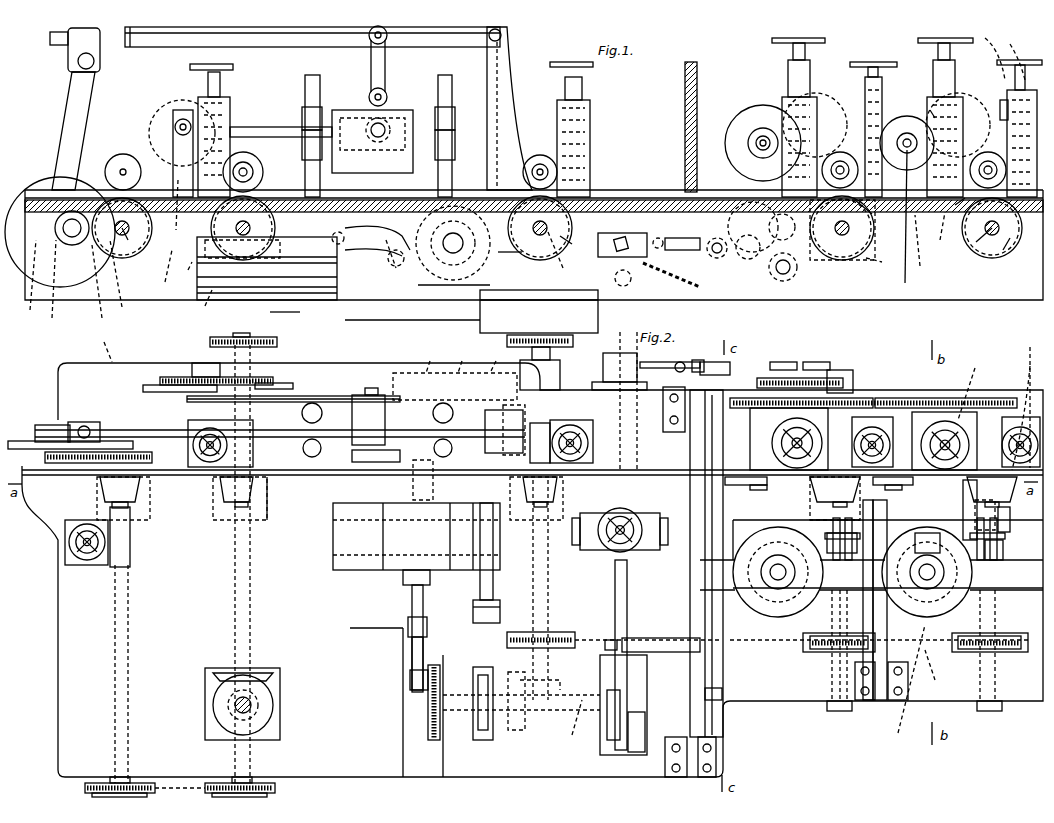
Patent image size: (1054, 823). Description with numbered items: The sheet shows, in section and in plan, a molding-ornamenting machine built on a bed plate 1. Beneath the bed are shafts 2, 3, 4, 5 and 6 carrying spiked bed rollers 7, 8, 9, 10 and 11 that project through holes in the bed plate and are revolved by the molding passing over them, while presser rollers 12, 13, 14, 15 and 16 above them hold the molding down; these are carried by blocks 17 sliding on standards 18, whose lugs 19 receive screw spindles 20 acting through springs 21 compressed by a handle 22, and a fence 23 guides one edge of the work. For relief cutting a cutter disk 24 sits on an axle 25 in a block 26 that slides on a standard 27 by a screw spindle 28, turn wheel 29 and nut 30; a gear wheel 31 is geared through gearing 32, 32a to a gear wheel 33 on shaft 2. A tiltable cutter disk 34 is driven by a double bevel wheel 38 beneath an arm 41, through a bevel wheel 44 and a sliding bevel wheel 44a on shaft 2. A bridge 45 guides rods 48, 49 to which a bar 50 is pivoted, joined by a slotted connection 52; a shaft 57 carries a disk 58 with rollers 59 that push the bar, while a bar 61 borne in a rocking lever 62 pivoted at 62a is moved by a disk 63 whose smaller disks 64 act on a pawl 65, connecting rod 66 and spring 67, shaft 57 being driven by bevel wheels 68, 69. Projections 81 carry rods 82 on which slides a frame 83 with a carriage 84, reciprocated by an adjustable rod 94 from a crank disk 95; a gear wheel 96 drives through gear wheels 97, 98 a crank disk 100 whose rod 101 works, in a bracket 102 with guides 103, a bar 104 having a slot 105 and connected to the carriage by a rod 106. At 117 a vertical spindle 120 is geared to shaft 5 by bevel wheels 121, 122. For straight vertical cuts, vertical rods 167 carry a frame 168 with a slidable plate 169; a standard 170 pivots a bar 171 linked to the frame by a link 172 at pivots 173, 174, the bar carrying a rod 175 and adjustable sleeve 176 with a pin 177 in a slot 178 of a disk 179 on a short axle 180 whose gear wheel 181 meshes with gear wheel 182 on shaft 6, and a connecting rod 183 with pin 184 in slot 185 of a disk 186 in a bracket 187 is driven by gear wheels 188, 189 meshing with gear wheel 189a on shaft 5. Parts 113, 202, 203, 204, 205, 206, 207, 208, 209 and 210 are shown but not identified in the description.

In FIG. 1, the bed plate 1 is at (160, 200).
In FIG. 1, the shaft 2 is at (990, 245).
In FIG. 2, the shaft 2 is at (1000, 590).
In FIG. 1, the shaft 3 is at (848, 238).
In FIG. 2, the shaft 3 is at (836, 651).
In FIG. 1, the shaft 4 is at (558, 256).
In FIG. 2, the shaft 4 is at (548, 600).
In FIG. 1, the shaft 5 is at (259, 230).
In FIG. 2, the shaft 5 is at (252, 778).
In FIG. 1, the shaft 6 is at (128, 240).
In FIG. 2, the shaft 6 is at (113, 777).
In FIG. 1, the bed roller 7 is at (1003, 250).
In FIG. 2, the bed roller 7 is at (1010, 520).
In FIG. 1, the bed roller 8 is at (875, 234).
In FIG. 2, the bed roller 8 is at (820, 505).
In FIG. 1, the bed roller 9 is at (562, 225).
In FIG. 2, the bed roller 9 is at (560, 498).
In FIG. 1, the bed roller 10 is at (216, 240).
In FIG. 2, the bed roller 10 is at (256, 510).
In FIG. 1, the bed roller 11 is at (151, 241).
In FIG. 2, the bed roller 11 is at (130, 517).
In FIG. 1, the presser roller 12 is at (955, 205).
In FIG. 2, the presser roller 12 is at (1006, 496).
In FIG. 1, the presser roller 13 is at (872, 214).
In FIG. 2, the presser roller 13 is at (815, 490).
In FIG. 1, the presser roller 14 is at (540, 155).
In FIG. 2, the presser roller 14 is at (555, 491).
In FIG. 1, the presser roller 15 is at (256, 170).
In FIG. 2, the presser roller 15 is at (220, 491).
In FIG. 1, the presser roller 16 is at (117, 160).
In FIG. 2, the presser roller 16 is at (100, 491).
In FIG. 1, the block 17 is at (1011, 54).
In FIG. 2, the block 17 is at (926, 592).
In FIG. 1, the standard 18 is at (976, 242).
In FIG. 2, the standard 18 is at (1028, 410).
In FIG. 1, the lug 19 is at (936, 233).
In FIG. 2, the lug 19 is at (1030, 399).
In FIG. 1, the screw spindle 20 is at (1008, 100).
In FIG. 2, the screw spindle 20 is at (977, 505).
In FIG. 1, the spring 21 is at (1004, 280).
In FIG. 1, the handle 22 is at (985, 52).
In FIG. 2, the handle 22 is at (975, 470).
In FIG. 1, the fence 23 is at (283, 192).
In FIG. 2, the fence 23 is at (301, 476).
In FIG. 1, the cutter disk 24 is at (748, 110).
In FIG. 2, the cutter disk 24 is at (745, 486).
In FIG. 1, the axle 25 is at (897, 223).
In FIG. 1, the block 26 is at (930, 110).
In FIG. 2, the block 26 is at (912, 430).
In FIG. 1, the standard 27 is at (830, 100).
In FIG. 1, the screw spindle 28 is at (990, 90).
In FIG. 2, the screw spindle 28 is at (852, 398).
In FIG. 1, the turn wheel 29 is at (772, 41).
In FIG. 2, the turn wheel 29 is at (970, 410).
In FIG. 1, the nut 30 is at (925, 248).
In FIG. 2, the nut 30 is at (968, 386).
In FIG. 1, the gear wheel 31 is at (764, 118).
In FIG. 2, the gear wheel 31 is at (926, 420).
In FIG. 1, the gearing 32 is at (842, 148).
In FIG. 2, the gearing 32 is at (937, 400).
In FIG. 1, the gearing 32a is at (872, 62).
In FIG. 1, the gear wheel 33 is at (883, 261).
In FIG. 2, the cutter disk 34 is at (773, 530).
In FIG. 2, the double bevel wheel 38 is at (938, 670).
In FIG. 2, the arm 41 is at (860, 612).
In FIG. 2, the bevel wheel 44 is at (903, 685).
In FIG. 2, the bevel wheel 44a is at (1002, 556).
In FIG. 2, the bridge 45 is at (702, 441).
In FIG. 2, the rod 48 is at (659, 678).
In FIG. 2, the rod 49 is at (650, 515).
In FIG. 2, the bar 50 is at (641, 640).
In FIG. 2, the adjustable slotted connection 52 is at (728, 690).
In FIG. 2, the shaft 57 is at (572, 724).
In FIG. 2, the disk 58 is at (625, 706).
In FIG. 2, the roller 59 is at (645, 729).
In FIG. 1, the bar 61 is at (625, 233).
In FIG. 2, the bar 61 is at (615, 353).
In FIG. 1, the rocking lever 62 is at (641, 238).
In FIG. 2, the rocking lever 62 is at (665, 362).
In FIG. 1, the pivot 62a is at (615, 279).
In FIG. 1, the disk 63 is at (792, 242).
In FIG. 2, the disk 63 is at (790, 357).
In FIG. 1, the smaller disk 64 is at (786, 281).
In FIG. 2, the smaller disk 64 is at (818, 362).
In FIG. 1, the pawl 65 is at (730, 260).
In FIG. 2, the pawl 65 is at (736, 362).
In FIG. 1, the connecting rod 66 is at (682, 232).
In FIG. 2, the connecting rod 66 is at (703, 356).
In FIG. 1, the spring 67 is at (666, 278).
In FIG. 2, the bevel wheel 68 is at (565, 681).
In FIG. 2, the bevel wheel 69 is at (520, 732).
In FIG. 2, the projection 81 is at (472, 607).
In FIG. 2, the rod 82 is at (478, 583).
In FIG. 2, the frame 83 is at (399, 580).
In FIG. 2, the carriage 84 is at (398, 582).
In FIG. 2, the adjustable rod 94 is at (424, 636).
In FIG. 2, the crank disk 95 is at (428, 716).
In FIG. 1, the gear wheel 96 is at (568, 242).
In FIG. 2, the gear wheel 96 is at (547, 393).
In FIG. 1, the gear wheel 97 is at (522, 252).
In FIG. 2, the gear wheel 97 is at (490, 359).
In FIG. 1, the gear wheel 98 is at (472, 290).
In FIG. 2, the gear wheel 98 is at (458, 359).
In FIG. 1, the crank disk 100 is at (448, 281).
In FIG. 2, the crank disk 100 is at (430, 359).
In FIG. 1, the rod 101 is at (377, 232).
In FIG. 1, the bracket 102 is at (366, 258).
In FIG. 1, the guide 103 is at (336, 233).
In FIG. 1, the bar 104 is at (386, 268).
In FIG. 1, the slot 105 is at (262, 264).
In FIG. 1, the rod 106 is at (392, 272).
In FIG. 2, the rod 106 is at (425, 497).
In FIG. 2, the slide 113 is at (480, 736).
In FIG. 2, the mounting point 117 is at (272, 677).
In FIG. 2, the vertical spindle 120 is at (252, 703).
In FIG. 2, the bevel wheel 121 is at (266, 672).
In FIG. 2, the bevel wheel 122 is at (270, 711).
In FIG. 1, the vertical rod 167 is at (305, 90).
In FIG. 2, the vertical rod 167 is at (320, 404).
In FIG. 1, the frame 168 is at (346, 108).
In FIG. 2, the frame 168 is at (386, 373).
In FIG. 1, the slidable plate 169 is at (392, 120).
In FIG. 2, the slidable plate 169 is at (378, 470).
In FIG. 1, the standard 170 is at (506, 96).
In FIG. 2, the standard 170 is at (510, 411).
In FIG. 1, the bar 171 is at (312, 44).
In FIG. 2, the bar 171 is at (176, 431).
In FIG. 1, the link 172 is at (368, 52).
In FIG. 1, the pivot 173 is at (386, 40).
In FIG. 2, the pivot 173 is at (368, 409).
In FIG. 1, the pivot 174 is at (387, 92).
In FIG. 1, the rod 175 is at (70, 113).
In FIG. 1, the adjustable sleeve 176 is at (68, 50).
In FIG. 2, the adjustable sleeve 176 is at (72, 420).
In FIG. 1, the pin 177 is at (49, 285).
In FIG. 2, the pin 177 is at (52, 360).
In FIG. 1, the slot 178 is at (42, 185).
In FIG. 1, the disk 179 is at (23, 282).
In FIG. 2, the disk 179 is at (30, 441).
In FIG. 1, the short axle 180 is at (72, 246).
In FIG. 1, the gear wheel 181 is at (104, 288).
In FIG. 2, the gear wheel 181 is at (102, 344).
In FIG. 1, the gear wheel 182 is at (123, 280).
In FIG. 1, the connecting rod 183 is at (300, 128).
In FIG. 2, the connecting rod 183 is at (306, 396).
In FIG. 1, the pin 184 is at (203, 103).
In FIG. 1, the slot 185 is at (172, 146).
In FIG. 1, the disk 186 is at (168, 120).
In FIG. 2, the disk 186 is at (148, 384).
In FIG. 1, the bracket 187 is at (179, 198).
In FIG. 2, the bracket 187 is at (176, 368).
In FIG. 1, the gear wheel 188 is at (176, 115).
In FIG. 2, the gear wheel 188 is at (184, 376).
In FIG. 1, the gear wheel 189 is at (182, 286).
In FIG. 2, the gear wheel 189 is at (216, 370).
In FIG. 1, the gear wheel 189a is at (181, 274).
In FIG. 2, the gear wheel 189a is at (266, 374).
In FIG. 2, the rack 202 is at (1010, 652).
In FIG. 2, the rack 203 is at (812, 650).
In FIG. 2, the rack 204 is at (575, 637).
In FIG. 2, the gear 205 is at (570, 345).
In FIG. 1, the gear 206 is at (285, 318).
In FIG. 2, the gear 206 is at (278, 341).
In FIG. 2, the rack 207 is at (275, 788).
In FIG. 2, the rack 208 is at (85, 788).
In FIG. 1, the shaft 209 is at (380, 320).
In FIG. 2, the shaft 209 is at (181, 763).
In FIG. 1, the box 210 is at (478, 318).